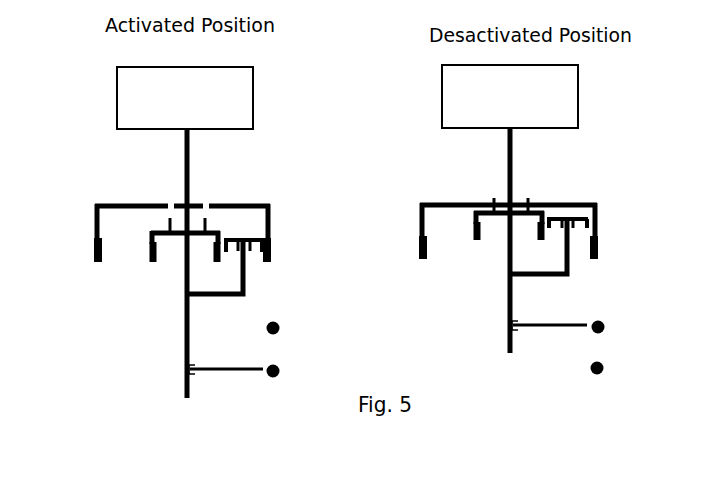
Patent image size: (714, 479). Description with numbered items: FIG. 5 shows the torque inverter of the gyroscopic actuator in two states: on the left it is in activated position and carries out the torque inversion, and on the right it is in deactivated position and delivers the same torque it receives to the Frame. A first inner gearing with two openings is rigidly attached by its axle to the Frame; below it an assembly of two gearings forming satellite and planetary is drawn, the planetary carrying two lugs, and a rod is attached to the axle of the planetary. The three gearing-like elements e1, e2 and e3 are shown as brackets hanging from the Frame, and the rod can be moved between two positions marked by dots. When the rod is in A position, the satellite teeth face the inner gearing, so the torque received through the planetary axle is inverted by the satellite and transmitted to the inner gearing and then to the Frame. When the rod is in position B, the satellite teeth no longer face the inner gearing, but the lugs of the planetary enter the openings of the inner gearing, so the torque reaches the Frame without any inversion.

The frame Frame is at (392, 231).
The first electrode / element e1 is at (334, 232).
The second electrode / element e2 is at (338, 245).
The third electrode / element e3 is at (393, 260).
The A position A is at (410, 368).
The position B is at (450, 328).